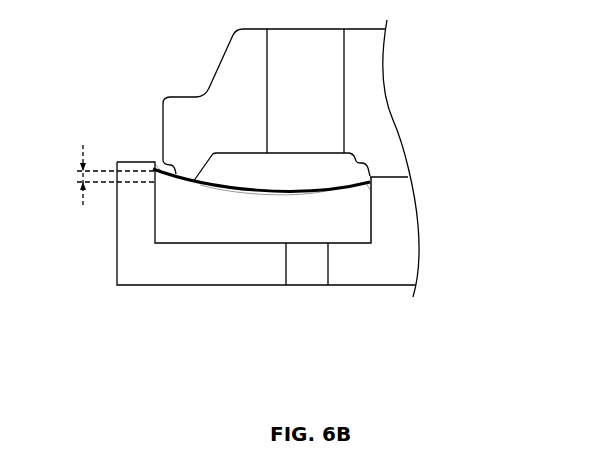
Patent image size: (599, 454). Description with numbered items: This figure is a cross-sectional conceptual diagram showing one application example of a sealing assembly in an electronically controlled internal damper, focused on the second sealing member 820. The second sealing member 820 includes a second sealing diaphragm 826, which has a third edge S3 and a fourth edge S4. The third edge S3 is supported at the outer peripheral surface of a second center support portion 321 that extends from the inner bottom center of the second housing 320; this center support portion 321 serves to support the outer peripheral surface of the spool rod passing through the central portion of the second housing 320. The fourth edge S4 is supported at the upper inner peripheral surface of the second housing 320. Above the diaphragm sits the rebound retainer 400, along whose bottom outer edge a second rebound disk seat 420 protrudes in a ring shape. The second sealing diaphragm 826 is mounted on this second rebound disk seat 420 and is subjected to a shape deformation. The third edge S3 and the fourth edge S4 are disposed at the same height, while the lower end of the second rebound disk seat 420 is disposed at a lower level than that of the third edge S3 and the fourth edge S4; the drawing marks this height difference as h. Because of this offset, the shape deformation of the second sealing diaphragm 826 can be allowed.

The rebound retainer 400 is at (216, 80).
The second rebound disk seat 420 is at (198, 165).
The second housing 320 is at (128, 257).
The second center support portion 321 is at (378, 228).
The second sealing diaphragm 826 is at (247, 192).
The second sealing member 820 is at (222, 333).
The fourth edge S4 is at (157, 166).
The third edge S3 is at (364, 188).
The height difference h is at (108, 176).